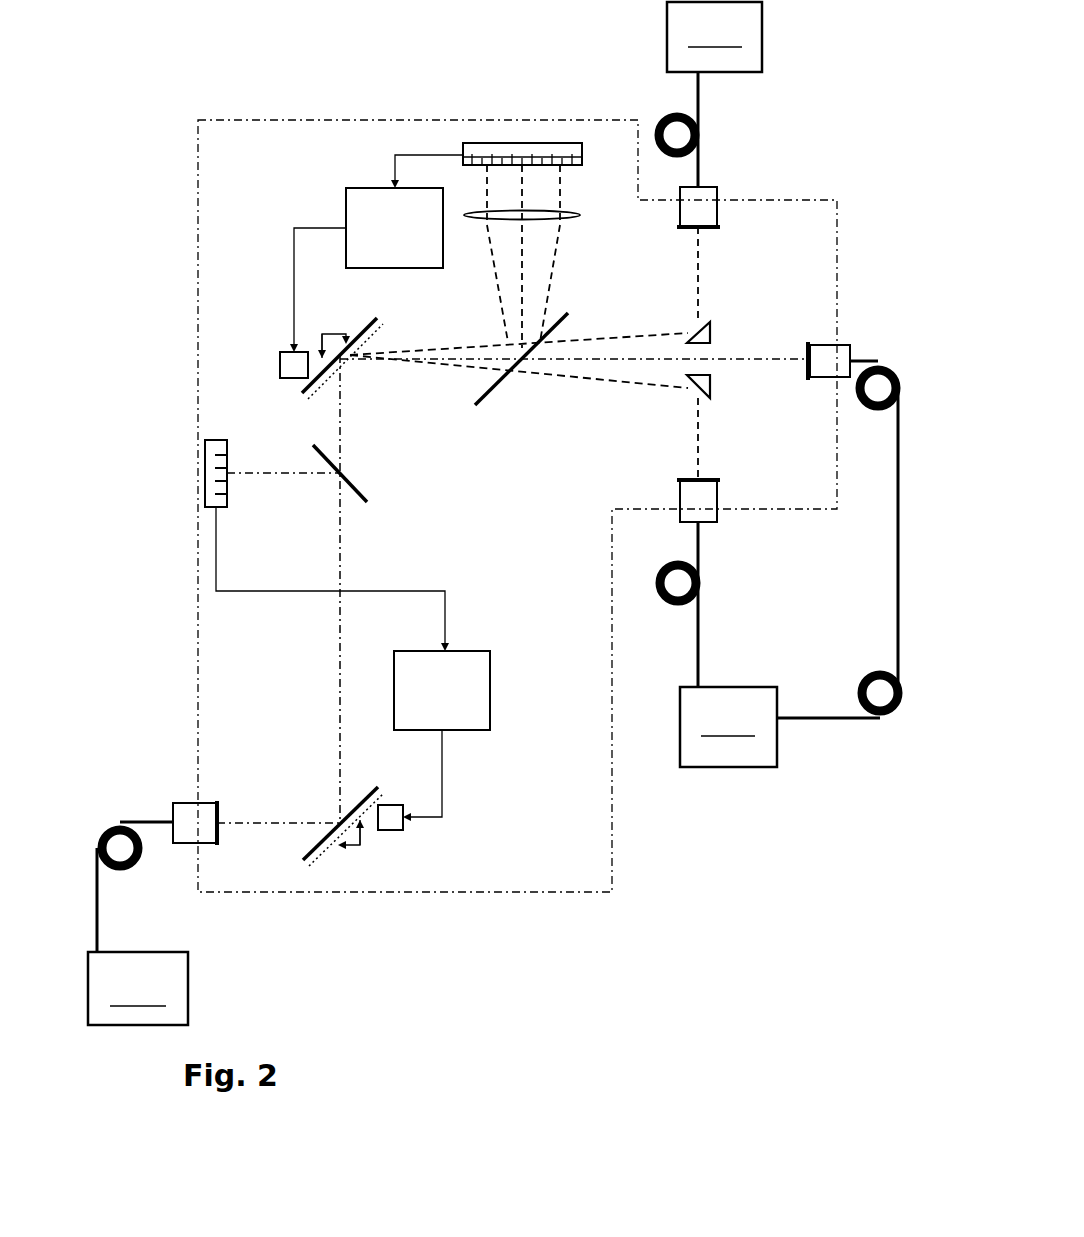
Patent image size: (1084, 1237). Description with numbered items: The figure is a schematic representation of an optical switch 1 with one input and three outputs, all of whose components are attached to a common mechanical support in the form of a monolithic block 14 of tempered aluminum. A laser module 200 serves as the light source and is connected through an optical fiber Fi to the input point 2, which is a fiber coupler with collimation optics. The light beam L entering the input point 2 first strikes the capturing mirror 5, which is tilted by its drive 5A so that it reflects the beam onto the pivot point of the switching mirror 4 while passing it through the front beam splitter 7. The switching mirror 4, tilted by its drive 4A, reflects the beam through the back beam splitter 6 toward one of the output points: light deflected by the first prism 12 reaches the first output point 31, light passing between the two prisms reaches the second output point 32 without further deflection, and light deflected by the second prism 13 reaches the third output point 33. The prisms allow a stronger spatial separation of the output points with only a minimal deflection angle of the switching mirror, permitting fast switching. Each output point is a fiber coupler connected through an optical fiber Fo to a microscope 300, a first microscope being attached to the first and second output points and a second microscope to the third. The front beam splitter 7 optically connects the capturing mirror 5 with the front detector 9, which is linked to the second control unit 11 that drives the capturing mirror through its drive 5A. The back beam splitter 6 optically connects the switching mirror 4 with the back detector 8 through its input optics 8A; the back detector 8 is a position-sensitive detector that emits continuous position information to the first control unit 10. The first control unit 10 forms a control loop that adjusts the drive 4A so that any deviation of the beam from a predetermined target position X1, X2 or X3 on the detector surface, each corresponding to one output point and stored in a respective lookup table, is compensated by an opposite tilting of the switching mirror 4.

The optical switch 1 is at (275, 120).
The input point 2 is at (184, 803).
The first output point 31 is at (712, 522).
The second output point 32 is at (826, 380).
The third output point 33 is at (710, 187).
The switching mirror 4 is at (305, 388).
The drive of the switching mirror 4A is at (280, 354).
The capturing mirror 5 is at (310, 862).
The drive of the capturing mirror 5A is at (396, 830).
The back beam splitter 6 is at (490, 410).
The front beam splitter 7 is at (360, 493).
The back detector 8 is at (520, 160).
The input optics of the back detector 8A is at (578, 212).
The front detector 9 is at (205, 478).
The first control unit 10 is at (365, 188).
The second control unit 11 is at (490, 700).
The first prism 12 is at (712, 331).
The second prism 13 is at (712, 386).
The monolithic block 14 is at (590, 867).
The laser module 200 is at (138, 988).
The microscope 300 is at (722, 384).
The optical fiber Fi is at (130, 822).
The optical fiber Fo is at (702, 94).
The light beam L is at (250, 824).
The target position X1 is at (493, 160).
The target position X2 is at (521, 160).
The target position X3 is at (560, 160).